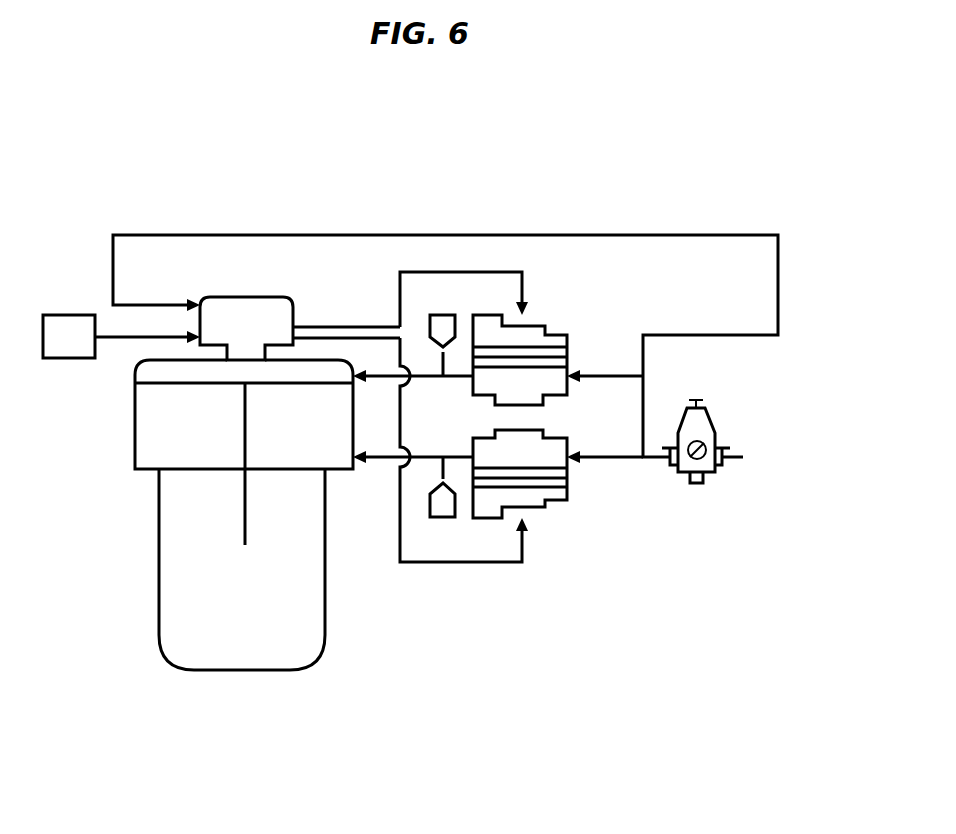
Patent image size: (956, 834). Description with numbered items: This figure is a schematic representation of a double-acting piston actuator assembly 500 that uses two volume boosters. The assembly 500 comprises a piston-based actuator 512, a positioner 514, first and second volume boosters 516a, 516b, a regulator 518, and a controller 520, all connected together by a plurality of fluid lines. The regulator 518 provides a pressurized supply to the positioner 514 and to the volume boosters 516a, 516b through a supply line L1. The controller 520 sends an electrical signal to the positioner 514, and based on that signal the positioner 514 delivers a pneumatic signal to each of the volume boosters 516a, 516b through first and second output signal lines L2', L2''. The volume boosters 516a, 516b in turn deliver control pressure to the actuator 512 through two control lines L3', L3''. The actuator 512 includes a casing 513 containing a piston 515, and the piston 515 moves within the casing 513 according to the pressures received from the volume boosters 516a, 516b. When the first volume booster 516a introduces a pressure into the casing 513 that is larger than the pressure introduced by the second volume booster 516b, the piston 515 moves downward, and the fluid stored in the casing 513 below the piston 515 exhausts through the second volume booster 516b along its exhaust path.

The double-acting piston actuator assembly 500 is at (470, 282).
The piston-based actuator 512 is at (146, 575).
The casing 513 is at (158, 500).
The positioner 514 is at (246, 297).
The piston 515 is at (173, 385).
The first volume booster 516a is at (548, 335).
The second volume booster 516b is at (536, 497).
The regulator 518 is at (710, 410).
The controller 520 is at (68, 358).
The supply line L1 is at (780, 277).
The first output signal line L2' is at (439, 257).
The second output signal line L2'' is at (464, 477).
The first control line L3' is at (412, 284).
The second control line L3'' is at (412, 534).